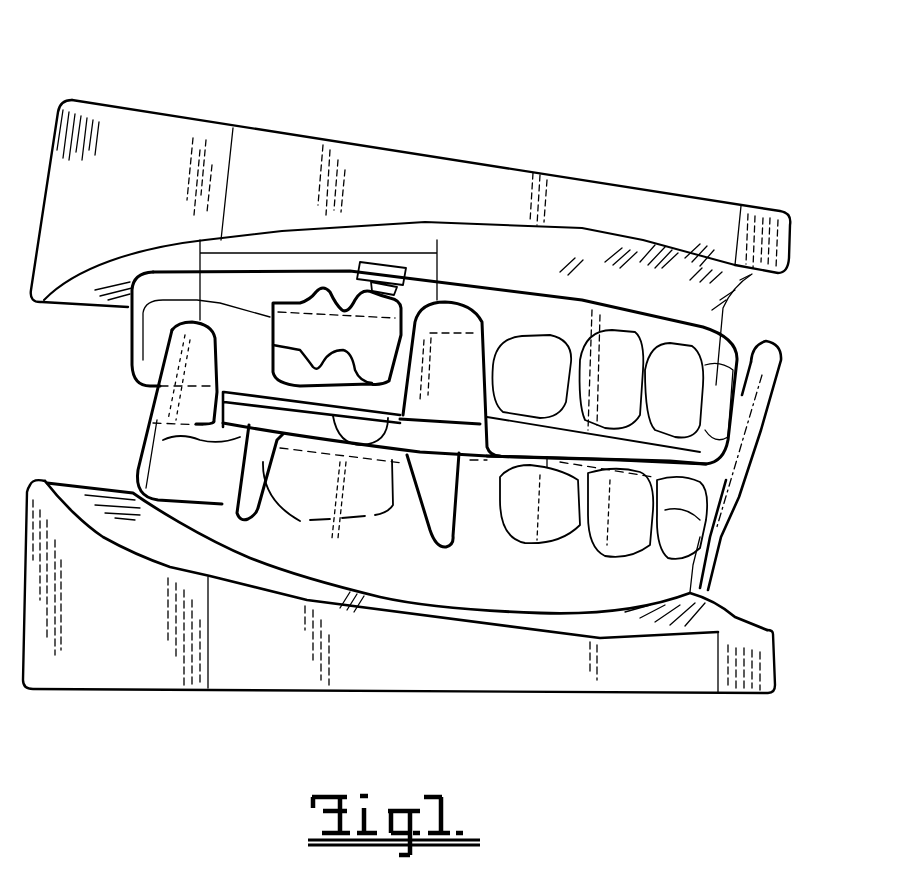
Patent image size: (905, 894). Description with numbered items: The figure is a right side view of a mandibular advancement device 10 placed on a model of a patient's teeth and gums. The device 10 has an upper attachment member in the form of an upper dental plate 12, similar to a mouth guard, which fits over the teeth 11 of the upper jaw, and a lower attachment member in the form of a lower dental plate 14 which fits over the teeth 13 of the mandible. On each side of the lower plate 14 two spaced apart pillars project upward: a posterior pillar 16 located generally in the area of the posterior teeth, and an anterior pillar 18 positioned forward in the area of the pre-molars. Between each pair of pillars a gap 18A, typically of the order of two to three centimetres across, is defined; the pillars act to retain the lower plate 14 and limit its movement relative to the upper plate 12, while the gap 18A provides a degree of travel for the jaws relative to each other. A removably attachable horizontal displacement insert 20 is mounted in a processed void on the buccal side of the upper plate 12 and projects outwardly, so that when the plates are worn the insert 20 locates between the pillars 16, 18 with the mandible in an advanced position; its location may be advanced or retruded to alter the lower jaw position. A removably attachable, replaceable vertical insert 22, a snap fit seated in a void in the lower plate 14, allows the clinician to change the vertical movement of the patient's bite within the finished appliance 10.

The mandibular advancement device 10 is at (770, 487).
The teeth of the upper jaw 11 is at (738, 430).
The upper dental plate 12 is at (673, 330).
The teeth of the mandible 13 is at (688, 562).
The lower dental plate 14 is at (630, 573).
The posterior pillar 16 is at (183, 358).
The anterior pillar 18 is at (453, 313).
The gap 18A is at (284, 250).
The horizontal displacement insert 20 is at (315, 342).
The vertical insert 22 is at (304, 422).